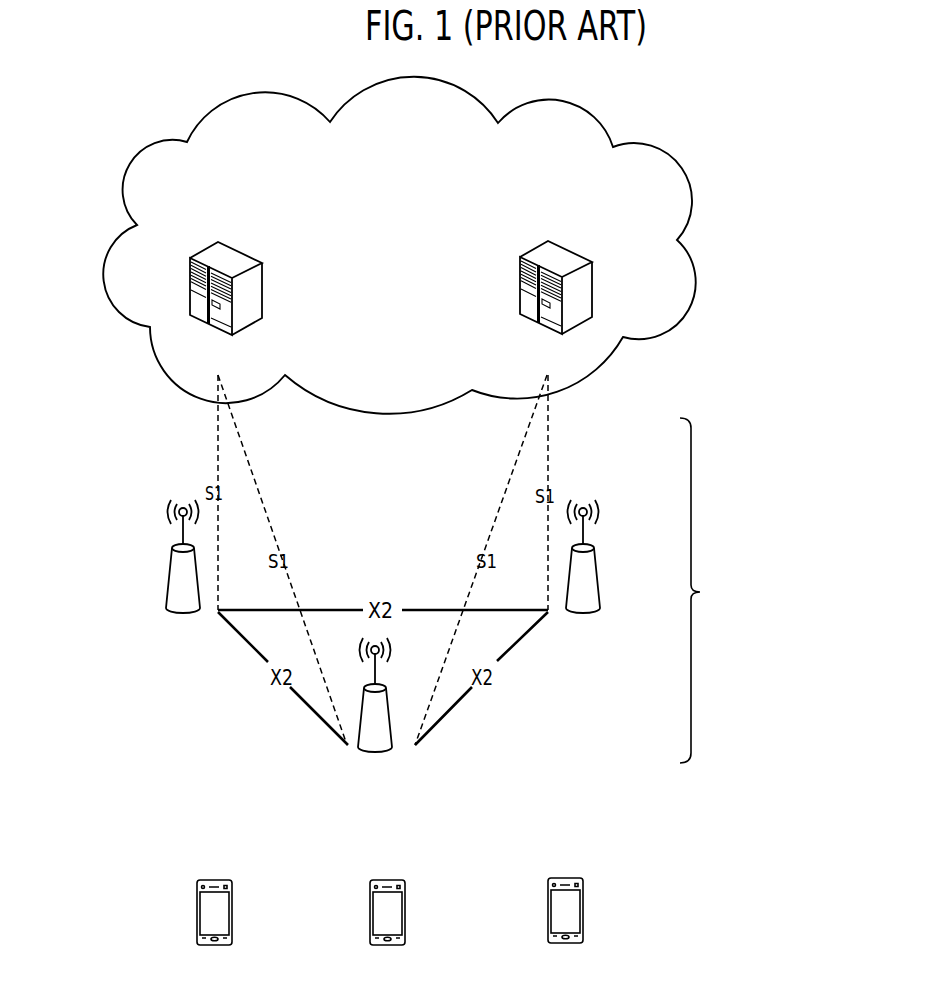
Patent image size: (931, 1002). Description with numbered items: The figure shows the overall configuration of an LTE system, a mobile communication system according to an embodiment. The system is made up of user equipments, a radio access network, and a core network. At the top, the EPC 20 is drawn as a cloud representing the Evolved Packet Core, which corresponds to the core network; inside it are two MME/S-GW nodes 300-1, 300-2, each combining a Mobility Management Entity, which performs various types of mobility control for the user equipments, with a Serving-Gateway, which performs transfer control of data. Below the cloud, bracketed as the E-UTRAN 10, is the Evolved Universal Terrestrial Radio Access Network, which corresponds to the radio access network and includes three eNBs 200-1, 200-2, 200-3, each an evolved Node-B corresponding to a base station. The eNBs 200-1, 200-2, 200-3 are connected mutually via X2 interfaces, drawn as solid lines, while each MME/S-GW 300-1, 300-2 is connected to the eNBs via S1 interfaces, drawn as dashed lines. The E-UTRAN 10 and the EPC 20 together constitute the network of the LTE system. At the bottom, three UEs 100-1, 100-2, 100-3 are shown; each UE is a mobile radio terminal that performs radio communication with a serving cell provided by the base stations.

The EPC 20 is at (593, 114).
The E-UTRAN 10 is at (736, 590).
The MME/S-GW 300-1 is at (243, 257).
The MME/S-GW 300-2 is at (562, 257).
The eNB 200-1 is at (170, 580).
The eNB 200-2 is at (392, 727).
The eNB 200-3 is at (595, 560).
The UE 100-1 is at (226, 880).
The UE 100-2 is at (421, 855).
The UE 100-3 is at (577, 878).